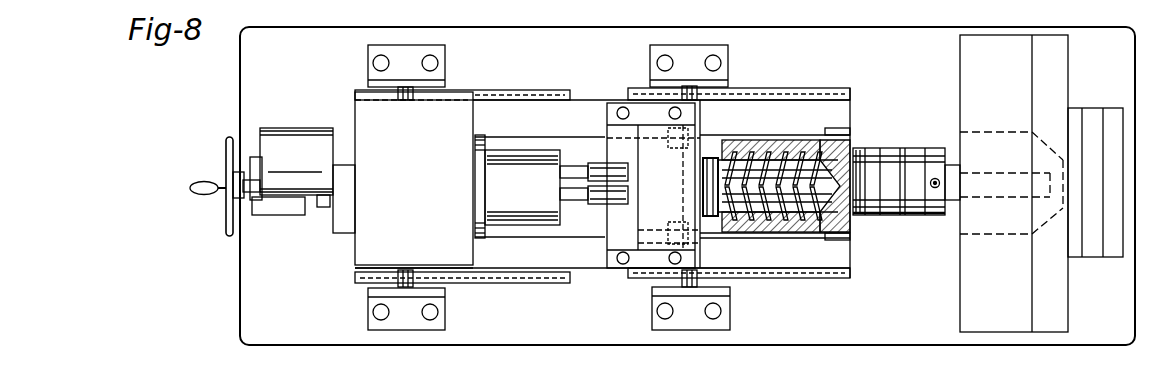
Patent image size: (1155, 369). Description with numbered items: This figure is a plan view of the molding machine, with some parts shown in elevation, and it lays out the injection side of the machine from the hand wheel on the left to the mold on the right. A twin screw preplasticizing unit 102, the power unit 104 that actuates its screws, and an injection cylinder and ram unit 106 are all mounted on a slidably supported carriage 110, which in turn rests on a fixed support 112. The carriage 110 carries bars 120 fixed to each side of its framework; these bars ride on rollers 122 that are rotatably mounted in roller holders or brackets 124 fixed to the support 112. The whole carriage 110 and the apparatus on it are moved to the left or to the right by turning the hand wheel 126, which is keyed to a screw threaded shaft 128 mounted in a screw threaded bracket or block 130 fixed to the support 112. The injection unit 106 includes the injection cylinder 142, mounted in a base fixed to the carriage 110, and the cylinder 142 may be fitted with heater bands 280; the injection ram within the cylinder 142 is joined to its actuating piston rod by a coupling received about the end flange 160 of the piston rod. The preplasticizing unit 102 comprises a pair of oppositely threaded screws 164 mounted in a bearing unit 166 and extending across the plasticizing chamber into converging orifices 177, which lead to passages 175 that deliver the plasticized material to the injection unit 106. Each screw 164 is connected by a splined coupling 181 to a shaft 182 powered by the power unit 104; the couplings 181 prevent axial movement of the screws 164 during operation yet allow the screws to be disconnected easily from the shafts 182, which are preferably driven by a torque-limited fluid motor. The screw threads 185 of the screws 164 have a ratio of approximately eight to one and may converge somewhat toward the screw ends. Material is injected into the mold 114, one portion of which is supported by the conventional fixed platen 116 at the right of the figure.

The twin screw preplasticizing unit 102 is at (815, 118).
The power unit 104 is at (370, 247).
The injection cylinder and ram unit 106 is at (900, 232).
The carriage 110 is at (590, 266).
The fixed support 112 is at (933, 312).
The mold 114 is at (1108, 258).
The fixed platen 116 is at (1062, 62).
The bars 120 is at (556, 79).
The rollers 122 is at (418, 94).
The roller holders or brackets 124 is at (437, 57).
The hand wheel 126 is at (225, 158).
The screw threaded shaft 128 is at (245, 200).
The screw threaded bracket or block 130 is at (272, 212).
The injection cylinder 142 is at (934, 152).
The end flange 160 is at (705, 158).
The oppositely threaded screws 164 is at (770, 146).
The bearing unit 166 is at (653, 195).
The passages 175 is at (853, 165).
The converging orifices 177 is at (853, 150).
The splined couplings 181 is at (603, 165).
The shafts 182 is at (592, 168).
The screw threads 185 is at (776, 148).
The heater bands 280 is at (903, 216).